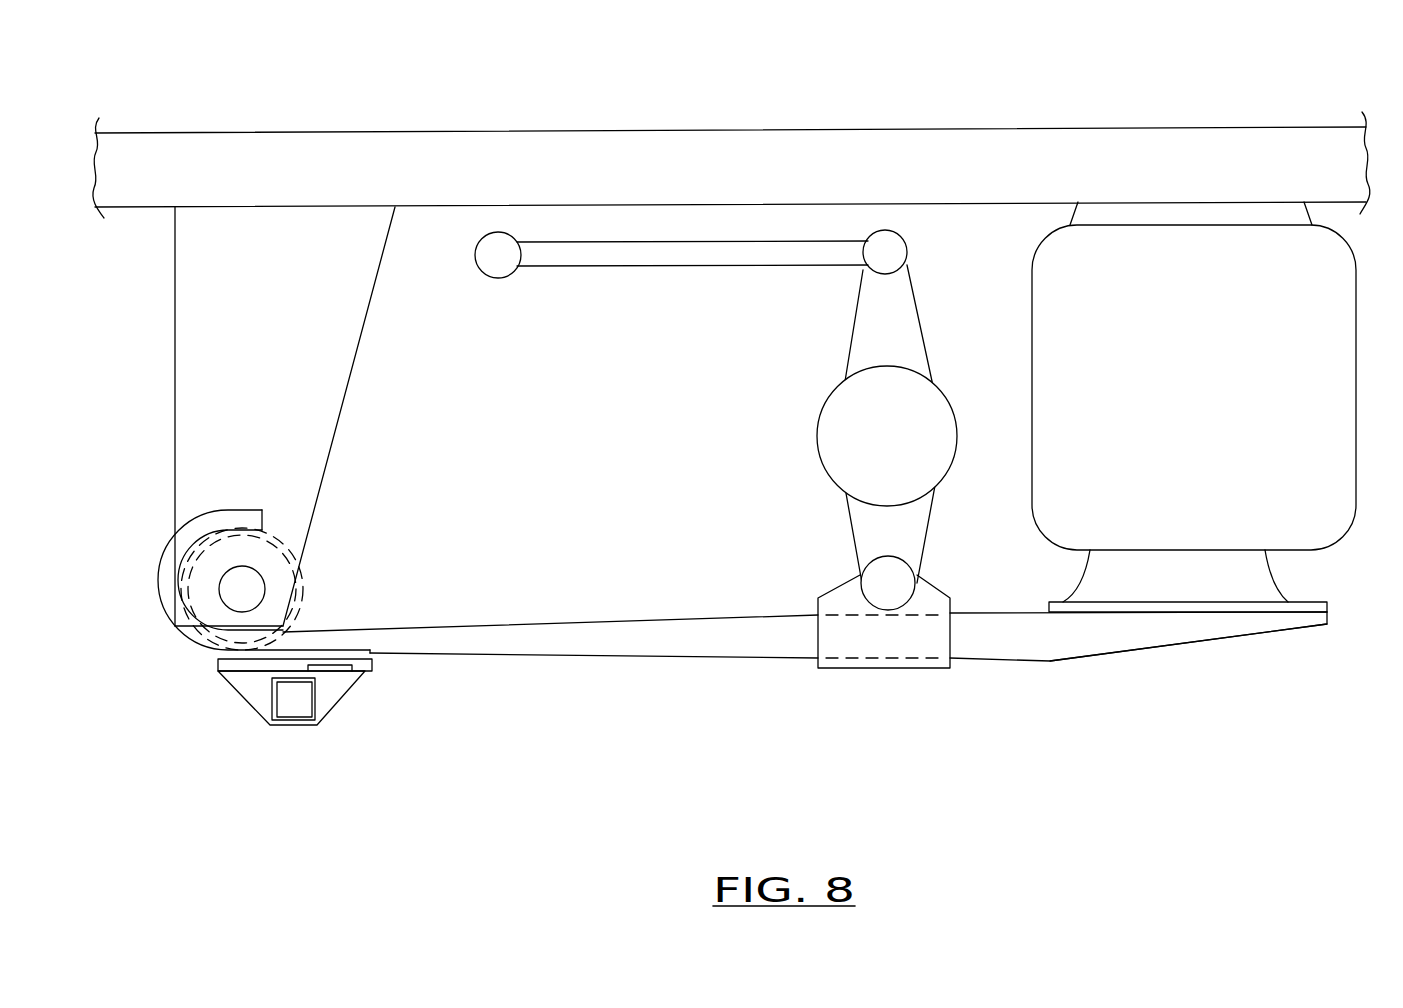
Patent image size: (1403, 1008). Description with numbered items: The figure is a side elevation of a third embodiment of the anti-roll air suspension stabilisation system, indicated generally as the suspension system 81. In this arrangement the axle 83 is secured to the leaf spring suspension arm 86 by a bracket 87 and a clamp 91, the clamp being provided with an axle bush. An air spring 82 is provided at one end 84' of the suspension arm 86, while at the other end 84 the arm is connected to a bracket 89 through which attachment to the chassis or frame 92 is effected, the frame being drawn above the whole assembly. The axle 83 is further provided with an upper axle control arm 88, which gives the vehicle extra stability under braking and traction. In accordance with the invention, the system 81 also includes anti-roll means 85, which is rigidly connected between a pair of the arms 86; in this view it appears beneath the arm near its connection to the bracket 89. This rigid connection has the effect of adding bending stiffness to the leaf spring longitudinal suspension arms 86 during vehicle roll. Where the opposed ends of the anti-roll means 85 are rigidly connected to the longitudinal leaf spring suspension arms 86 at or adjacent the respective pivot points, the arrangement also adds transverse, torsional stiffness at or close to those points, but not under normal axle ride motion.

The suspension system 81 is at (555, 705).
The air spring 82 is at (1212, 406).
The axle 83 is at (897, 448).
The end of the suspension arm 84 is at (261, 630).
The end of the suspension arm 84' is at (1188, 658).
The anti-roll means 85 is at (288, 703).
The leaf spring suspension arm 86 is at (552, 628).
The bracket 87 is at (862, 520).
The upper axle control arm 88 is at (660, 257).
The bracket 89 is at (268, 410).
The clamp 91 is at (898, 668).
The chassis or frame 92 is at (752, 162).